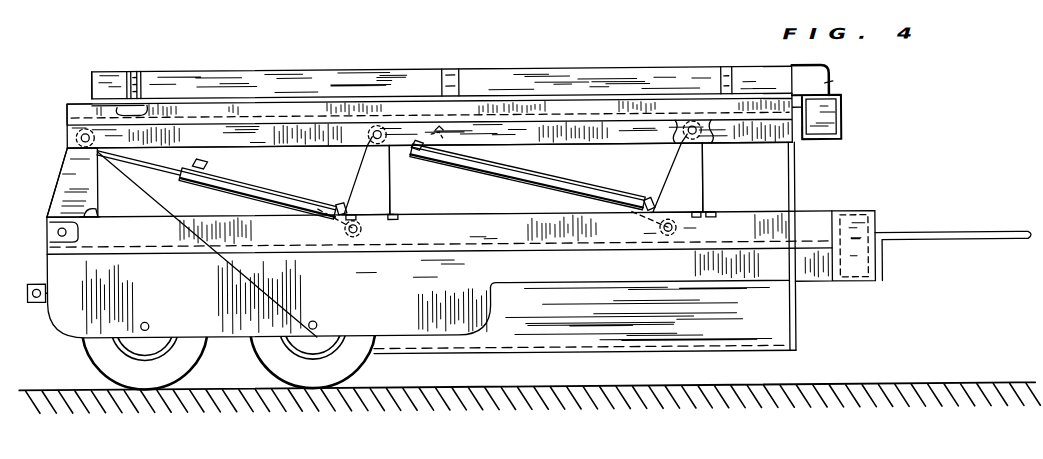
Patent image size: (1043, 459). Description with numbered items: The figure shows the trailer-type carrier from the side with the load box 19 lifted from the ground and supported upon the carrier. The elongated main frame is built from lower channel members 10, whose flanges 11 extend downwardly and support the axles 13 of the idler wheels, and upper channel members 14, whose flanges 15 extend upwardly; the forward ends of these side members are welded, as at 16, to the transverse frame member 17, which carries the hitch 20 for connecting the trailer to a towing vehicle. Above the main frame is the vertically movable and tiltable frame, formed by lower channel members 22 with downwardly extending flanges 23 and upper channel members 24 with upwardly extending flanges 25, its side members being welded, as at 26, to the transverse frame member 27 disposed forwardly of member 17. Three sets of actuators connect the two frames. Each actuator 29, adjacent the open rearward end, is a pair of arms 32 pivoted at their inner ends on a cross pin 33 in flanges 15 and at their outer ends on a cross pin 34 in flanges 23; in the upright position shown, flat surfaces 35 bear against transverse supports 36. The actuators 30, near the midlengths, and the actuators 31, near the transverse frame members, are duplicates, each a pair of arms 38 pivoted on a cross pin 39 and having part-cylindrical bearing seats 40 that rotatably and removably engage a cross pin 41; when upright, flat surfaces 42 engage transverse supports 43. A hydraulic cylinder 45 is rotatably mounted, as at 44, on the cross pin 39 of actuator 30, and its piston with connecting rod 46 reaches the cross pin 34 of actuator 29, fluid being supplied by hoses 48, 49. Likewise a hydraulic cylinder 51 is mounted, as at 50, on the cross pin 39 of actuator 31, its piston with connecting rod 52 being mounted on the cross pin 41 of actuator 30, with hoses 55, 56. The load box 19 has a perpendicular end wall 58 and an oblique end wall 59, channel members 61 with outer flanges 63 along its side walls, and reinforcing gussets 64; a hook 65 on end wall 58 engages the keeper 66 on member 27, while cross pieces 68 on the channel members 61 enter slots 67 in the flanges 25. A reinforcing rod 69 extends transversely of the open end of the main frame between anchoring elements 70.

The lower channel member 10 is at (521, 284).
The flange 11 is at (466, 322).
The axle 13 is at (149, 324).
The upper channel member 14 is at (592, 243).
The flange 15 is at (468, 220).
The weld 16 is at (828, 218).
The transverse frame member 17 is at (860, 216).
The load box 19 is at (116, 72).
The hitch 20 is at (980, 240).
The lower channel member 22 is at (210, 125).
The flange 23 is at (296, 148).
The upper channel member 24 is at (70, 102).
The flange 25 is at (265, 110).
The weld 26 is at (804, 146).
The transverse frame member 27 is at (830, 130).
The actuator 29 is at (56, 178).
The actuator 30 is at (398, 187).
The actuator 31 is at (708, 179).
The arm 32 is at (72, 167).
The cross pin 33 is at (70, 229).
The cross pin 34 is at (82, 134).
The flat surface 35 is at (88, 212).
The transverse support 36 is at (100, 214).
The arm 38 is at (386, 179).
The cross pin 39 is at (363, 228).
The part-cylindrical bearing seat 40 is at (682, 132).
The cross pin 41 is at (381, 128).
The flat surface 42 is at (378, 216).
The transverse support 43 is at (396, 214).
The rotatable mounting 44 is at (345, 237).
The hydraulic cylinder 45 is at (252, 194).
The piston with connecting rod 46 is at (134, 175).
The first hose 48 is at (205, 164).
The second hose 49 is at (343, 204).
The rotatable mounting 50 is at (663, 240).
The hydraulic cylinder 51 is at (575, 193).
The piston with connecting rod 52 is at (414, 152).
The first hose 55 is at (446, 136).
The second hose 56 is at (650, 200).
The end wall 58 is at (795, 207).
The end wall 59 is at (142, 218).
The channel member 61 is at (536, 101).
The outer flange 63 is at (314, 110).
The reinforcing gusset 64 is at (458, 78).
The hook 65 is at (808, 70).
The keeper 66 is at (834, 88).
The slot 67 is at (150, 100).
The cross piece 68 is at (108, 100).
The reinforcing rod 69 is at (44, 300).
The anchoring element 70 is at (28, 288).